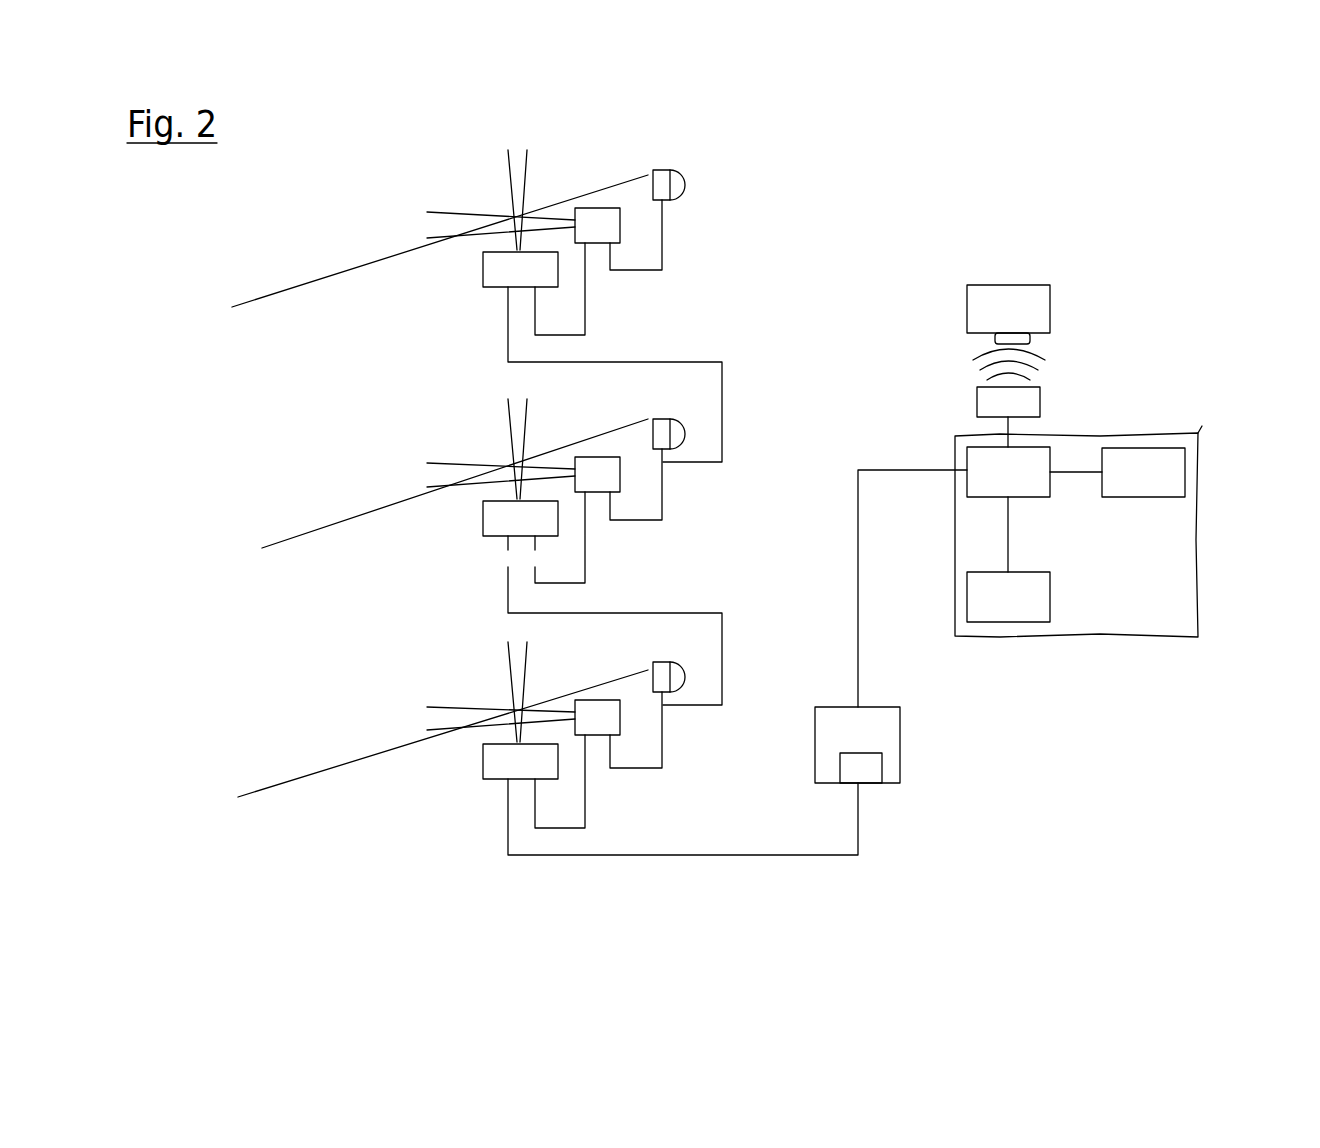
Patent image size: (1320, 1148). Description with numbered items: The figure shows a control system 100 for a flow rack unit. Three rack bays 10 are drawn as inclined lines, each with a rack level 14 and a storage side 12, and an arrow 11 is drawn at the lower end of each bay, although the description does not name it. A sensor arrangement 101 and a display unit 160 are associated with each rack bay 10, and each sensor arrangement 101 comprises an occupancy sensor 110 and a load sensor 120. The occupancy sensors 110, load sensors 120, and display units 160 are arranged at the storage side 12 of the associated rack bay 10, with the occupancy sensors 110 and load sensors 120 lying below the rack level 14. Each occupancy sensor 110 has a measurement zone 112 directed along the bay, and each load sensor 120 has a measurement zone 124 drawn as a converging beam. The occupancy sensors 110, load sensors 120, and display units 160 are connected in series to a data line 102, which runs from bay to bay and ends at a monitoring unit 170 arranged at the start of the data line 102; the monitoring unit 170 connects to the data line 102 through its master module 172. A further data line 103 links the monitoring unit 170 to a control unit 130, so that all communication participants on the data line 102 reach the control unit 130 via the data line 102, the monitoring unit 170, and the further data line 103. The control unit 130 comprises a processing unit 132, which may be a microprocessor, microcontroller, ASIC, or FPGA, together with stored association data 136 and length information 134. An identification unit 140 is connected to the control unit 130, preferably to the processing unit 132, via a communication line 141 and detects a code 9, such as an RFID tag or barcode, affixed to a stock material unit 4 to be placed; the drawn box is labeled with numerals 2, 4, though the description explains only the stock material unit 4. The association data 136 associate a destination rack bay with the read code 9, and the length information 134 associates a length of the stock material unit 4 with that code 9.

The rack bay 10 is at (307, 280).
The direction of movement 11 is at (247, 292).
The storage side 12 is at (583, 172).
The rack level 14 is at (370, 262).
The measurement zone 112 is at (442, 213).
The measurement zone 124 is at (523, 170).
The occupancy sensor 110 is at (597, 471).
The load sensor 120 is at (520, 515).
The display unit 160 is at (663, 172).
The data line 102 is at (667, 243).
The sensor arrangement 101 is at (568, 272).
The further data line 103 is at (858, 670).
The control system 100 is at (1090, 250).
The external device 2 is at (1008, 309).
The stock material unit 4 is at (1008, 309).
The code 9 is at (1030, 338).
The identification unit 140 is at (1009, 383).
The communication line 141 is at (1010, 425).
The control unit 130 is at (1200, 488).
The processing unit 132 is at (1008, 472).
The length information 134 is at (1008, 559).
The association data 136 is at (1117, 472).
The monitoring unit 170 is at (901, 745).
The master module 172 is at (882, 768).